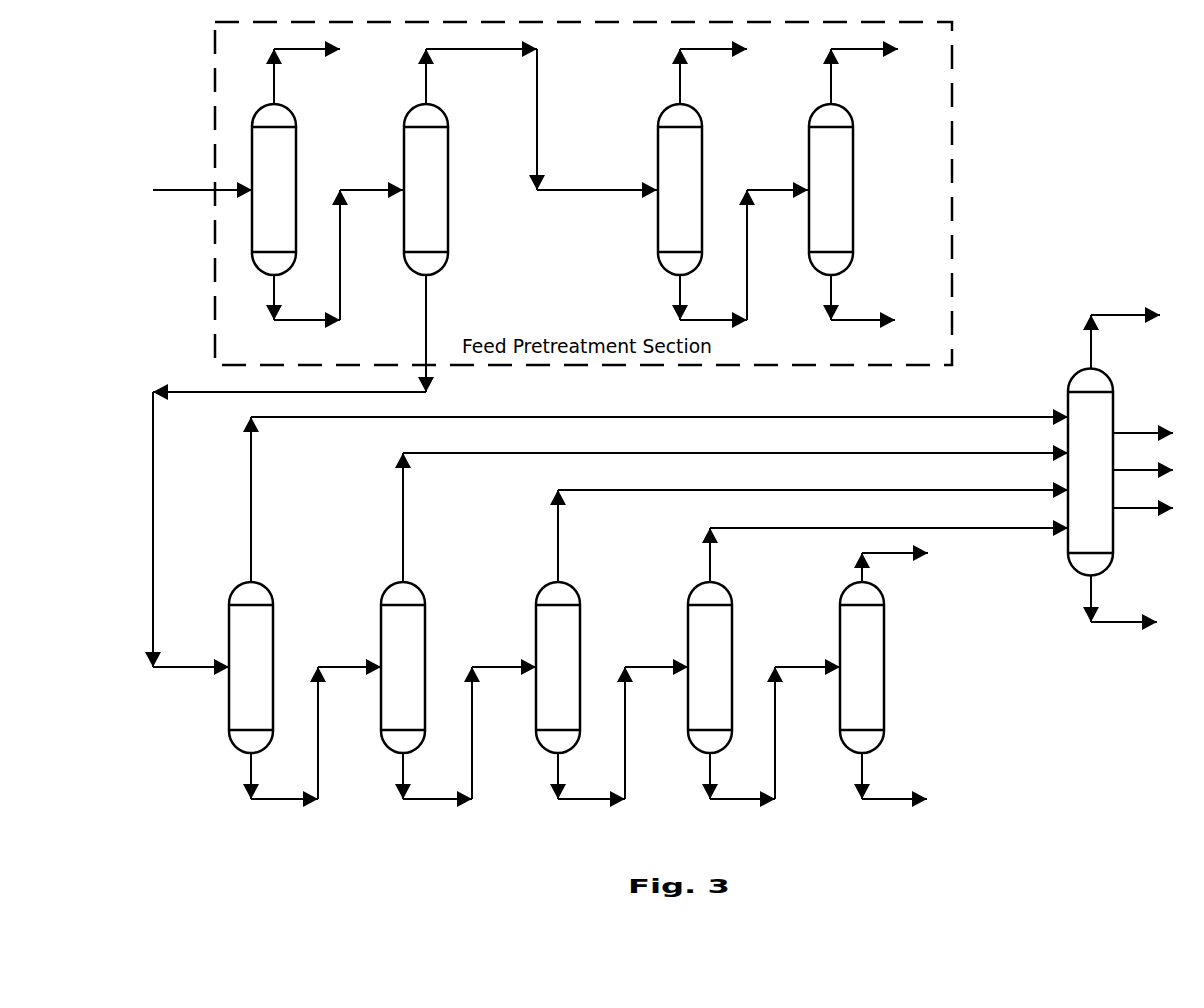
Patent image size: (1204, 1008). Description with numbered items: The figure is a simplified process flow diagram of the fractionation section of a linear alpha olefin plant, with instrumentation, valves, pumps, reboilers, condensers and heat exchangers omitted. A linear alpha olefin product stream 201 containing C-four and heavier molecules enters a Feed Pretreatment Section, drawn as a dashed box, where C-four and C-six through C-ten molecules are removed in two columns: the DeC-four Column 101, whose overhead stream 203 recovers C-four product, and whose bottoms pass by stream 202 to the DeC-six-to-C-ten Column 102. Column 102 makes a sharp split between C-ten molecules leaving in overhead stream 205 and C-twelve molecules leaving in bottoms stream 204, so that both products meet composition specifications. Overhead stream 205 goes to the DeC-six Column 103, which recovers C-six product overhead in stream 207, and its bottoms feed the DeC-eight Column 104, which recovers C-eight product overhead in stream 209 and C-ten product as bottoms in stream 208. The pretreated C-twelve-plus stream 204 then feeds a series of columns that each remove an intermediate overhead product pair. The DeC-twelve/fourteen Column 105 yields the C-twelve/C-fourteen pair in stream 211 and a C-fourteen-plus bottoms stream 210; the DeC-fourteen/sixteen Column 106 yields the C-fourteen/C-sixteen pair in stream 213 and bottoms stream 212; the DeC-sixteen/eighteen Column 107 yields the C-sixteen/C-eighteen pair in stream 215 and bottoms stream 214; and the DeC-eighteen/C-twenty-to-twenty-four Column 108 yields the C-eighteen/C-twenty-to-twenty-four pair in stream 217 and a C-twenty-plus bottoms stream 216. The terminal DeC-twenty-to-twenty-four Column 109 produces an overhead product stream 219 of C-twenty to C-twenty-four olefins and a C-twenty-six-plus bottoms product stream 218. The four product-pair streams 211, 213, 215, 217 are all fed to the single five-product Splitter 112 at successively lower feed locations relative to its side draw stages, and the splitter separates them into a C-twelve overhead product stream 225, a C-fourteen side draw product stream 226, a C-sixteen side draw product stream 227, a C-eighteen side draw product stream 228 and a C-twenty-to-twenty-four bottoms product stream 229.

The DeC4 Column 101 is at (300, 160).
The DeC6-C10 Column 102 is at (451, 160).
The DeC6 Column 103 is at (710, 160).
The DeC8 Column 104 is at (865, 160).
The DeC12/C14 Column 105 is at (283, 640).
The DeC14/C16 Column 106 is at (434, 640).
The DeC16/C18 Column 107 is at (588, 640).
The DeC18/C20-C24 Column 108 is at (738, 640).
The DeC20-C24 Column 109 is at (895, 698).
The C12/C14/C16/C18/C20-C24 Splitter 112 is at (1118, 378).
The LAO product stream 201 is at (212, 185).
The bottoms stream of column 101 202 is at (300, 322).
The C4 product stream 203 is at (312, 52).
The bottoms stream 204 is at (432, 340).
The overhead stream 205 is at (600, 197).
The C6 product stream 207 is at (718, 52).
The C10 product stream 208 is at (860, 322).
The C8 product stream 209 is at (872, 52).
The bottoms stream 210 is at (280, 806).
The intermediate overhead product pair stream 211 is at (255, 522).
The bottoms stream 212 is at (435, 806).
The intermediate overhead product pair stream 213 is at (408, 522).
The bottoms stream 214 is at (588, 806).
The intermediate overhead product pair stream 215 is at (563, 527).
The bottoms stream 216 is at (745, 806).
The intermediate overhead product pair stream 217 is at (752, 533).
The bottoms product stream 218 is at (891, 806).
The overhead product stream 219 is at (905, 563).
The C12 overhead product stream 225 is at (1127, 310).
The C14 side draw product stream 226 is at (1127, 428).
The C16 side draw product stream 227 is at (1138, 473).
The C18 side draw product stream 228 is at (1130, 517).
The C20-C24 bottoms product stream 229 is at (1125, 628).